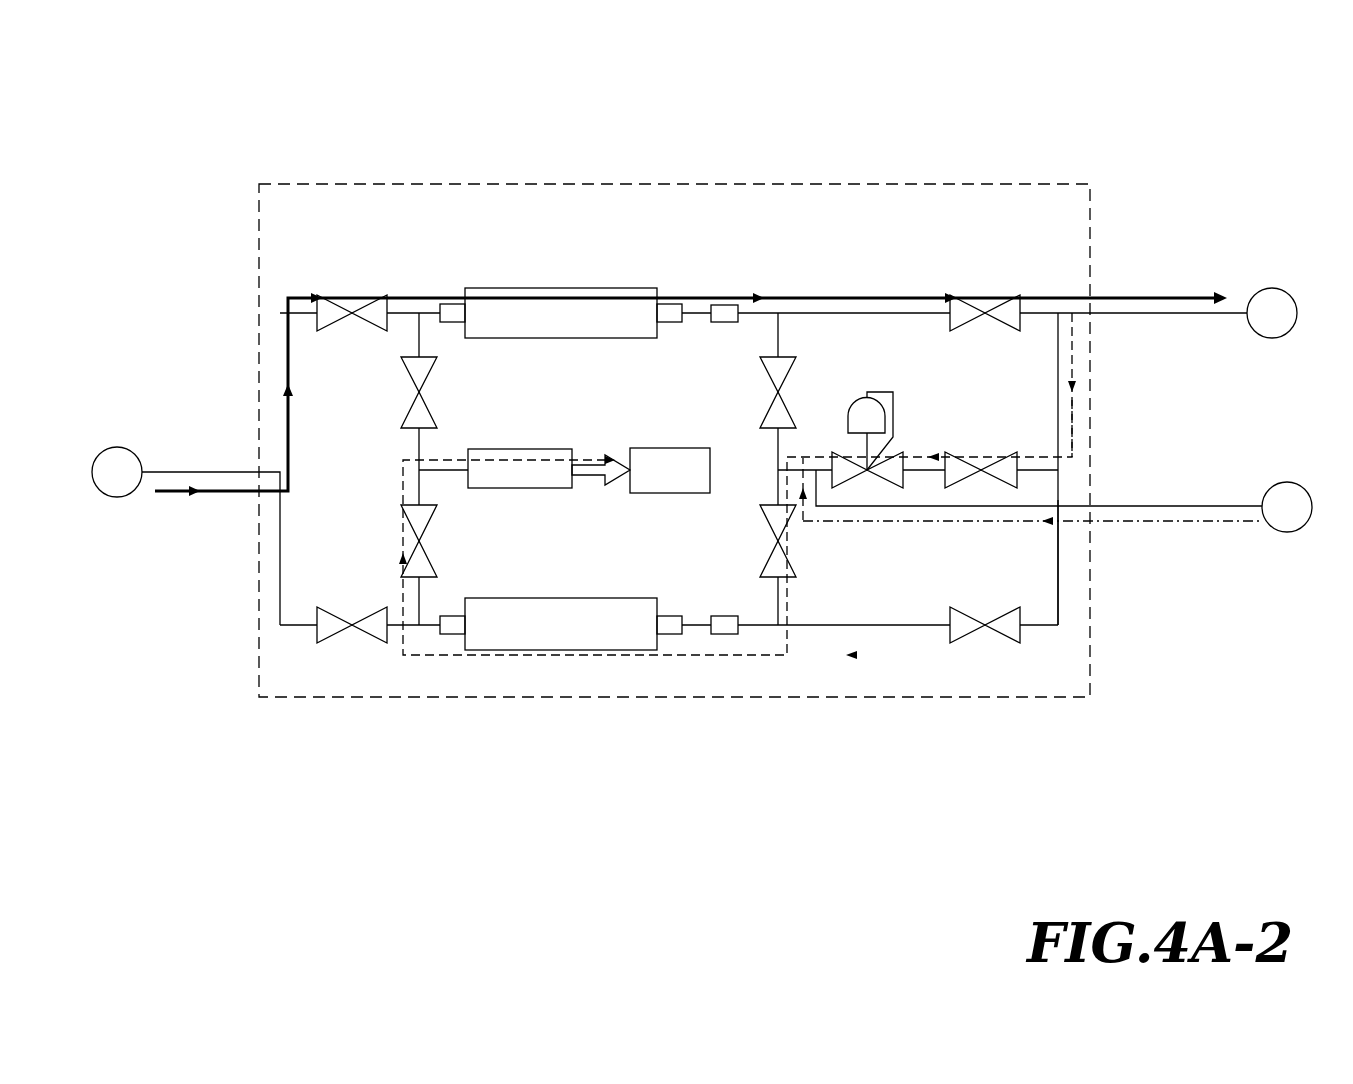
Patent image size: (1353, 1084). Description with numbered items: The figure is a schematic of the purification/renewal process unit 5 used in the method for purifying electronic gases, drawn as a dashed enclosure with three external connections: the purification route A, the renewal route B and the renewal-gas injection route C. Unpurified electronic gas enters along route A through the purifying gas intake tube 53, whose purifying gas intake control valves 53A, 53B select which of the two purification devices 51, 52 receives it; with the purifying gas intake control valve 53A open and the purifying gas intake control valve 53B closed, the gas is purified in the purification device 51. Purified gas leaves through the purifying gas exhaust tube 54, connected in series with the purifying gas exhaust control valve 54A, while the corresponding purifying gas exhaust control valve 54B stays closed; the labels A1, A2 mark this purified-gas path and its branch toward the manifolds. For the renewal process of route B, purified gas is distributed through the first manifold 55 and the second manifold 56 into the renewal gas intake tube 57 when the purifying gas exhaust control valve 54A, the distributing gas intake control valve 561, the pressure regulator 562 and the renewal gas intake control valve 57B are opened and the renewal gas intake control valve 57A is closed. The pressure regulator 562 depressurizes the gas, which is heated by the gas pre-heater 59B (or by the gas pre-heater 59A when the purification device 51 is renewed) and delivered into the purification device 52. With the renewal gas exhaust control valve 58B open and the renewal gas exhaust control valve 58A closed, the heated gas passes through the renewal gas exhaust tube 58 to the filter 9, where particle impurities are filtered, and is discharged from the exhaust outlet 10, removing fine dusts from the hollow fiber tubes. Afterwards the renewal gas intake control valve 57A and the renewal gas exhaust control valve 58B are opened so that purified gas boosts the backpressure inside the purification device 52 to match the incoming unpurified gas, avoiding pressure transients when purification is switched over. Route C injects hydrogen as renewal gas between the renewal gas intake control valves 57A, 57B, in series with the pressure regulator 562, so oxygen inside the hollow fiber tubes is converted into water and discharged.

The purification/renewal process unit 5 is at (303, 183).
The filter 9 is at (520, 490).
The exhaust outlet 10 is at (648, 448).
The purification device 51 is at (523, 287).
The purification device 52 is at (527, 635).
The purifying gas intake tube 53 is at (277, 450).
The purifying gas intake control valve 53A is at (363, 313).
The purifying gas intake control valve 53B is at (363, 633).
The purifying gas exhaust tube 54 is at (953, 425).
The purifying gas exhaust control valve 54A is at (967, 297).
The purifying gas exhaust control valve 54B is at (968, 637).
The first manifold 55 is at (1058, 542).
The second manifold 56 is at (1021, 482).
The distributing gas intake control valve 561 is at (990, 473).
The pressure regulator 562 is at (872, 412).
The renewal gas intake tube 57 is at (739, 426).
The renewal gas intake control valve 57A is at (785, 355).
The renewal gas intake control valve 57B is at (775, 577).
The renewal gas exhaust tube 58 is at (286, 439).
The renewal gas exhaust control valve 58A is at (410, 410).
The renewal gas exhaust control valve 58B is at (415, 528).
The gas pre-heater 59A is at (723, 304).
The gas pre-heater 59B is at (705, 633).
The route A is at (117, 472).
The route B is at (1272, 313).
The route C is at (1287, 507).
The first flow A1 is at (1190, 298).
The second flow A2 is at (1072, 433).